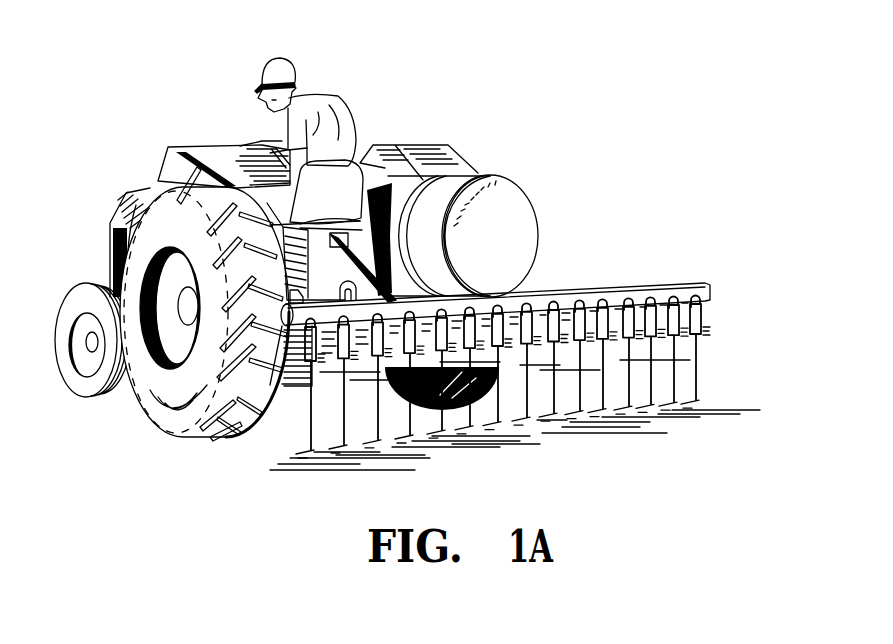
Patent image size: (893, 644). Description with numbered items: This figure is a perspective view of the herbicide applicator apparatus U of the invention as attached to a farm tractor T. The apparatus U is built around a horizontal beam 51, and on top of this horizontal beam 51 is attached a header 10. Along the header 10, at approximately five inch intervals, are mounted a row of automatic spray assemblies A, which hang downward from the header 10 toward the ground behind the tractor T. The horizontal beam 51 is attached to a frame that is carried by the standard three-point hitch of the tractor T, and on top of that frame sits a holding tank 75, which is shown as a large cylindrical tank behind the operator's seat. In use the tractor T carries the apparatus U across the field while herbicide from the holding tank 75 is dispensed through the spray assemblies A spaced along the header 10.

The tractor T is at (160, 168).
The holding tank 75 is at (488, 176).
The herbicide applicator apparatus U is at (550, 190).
The header 10 is at (698, 284).
The automatic spray assemblies A is at (714, 320).
The horizontal beam 51 is at (268, 386).